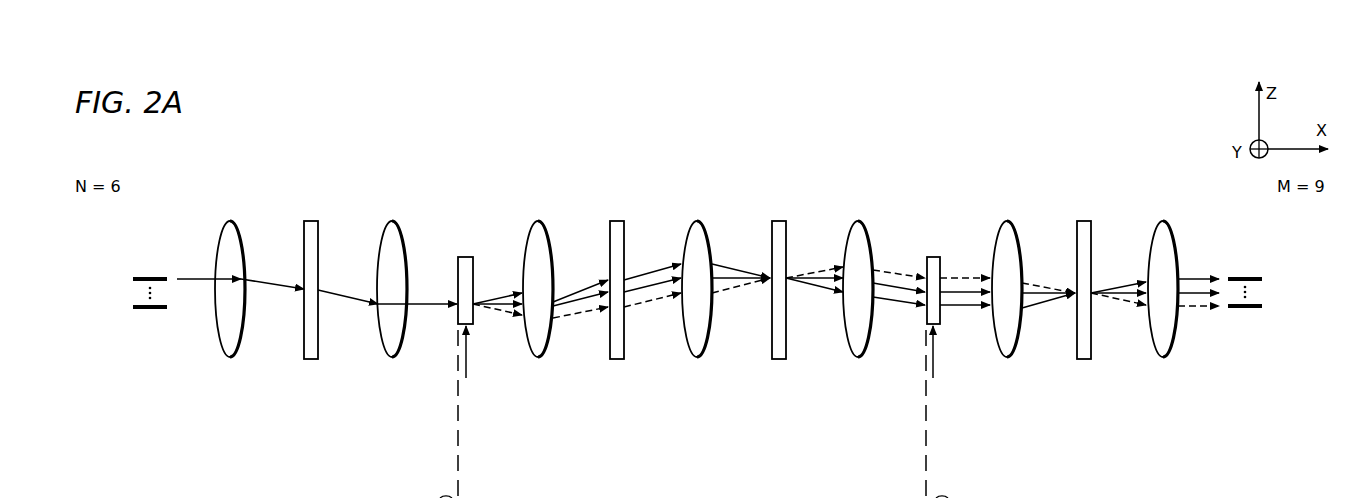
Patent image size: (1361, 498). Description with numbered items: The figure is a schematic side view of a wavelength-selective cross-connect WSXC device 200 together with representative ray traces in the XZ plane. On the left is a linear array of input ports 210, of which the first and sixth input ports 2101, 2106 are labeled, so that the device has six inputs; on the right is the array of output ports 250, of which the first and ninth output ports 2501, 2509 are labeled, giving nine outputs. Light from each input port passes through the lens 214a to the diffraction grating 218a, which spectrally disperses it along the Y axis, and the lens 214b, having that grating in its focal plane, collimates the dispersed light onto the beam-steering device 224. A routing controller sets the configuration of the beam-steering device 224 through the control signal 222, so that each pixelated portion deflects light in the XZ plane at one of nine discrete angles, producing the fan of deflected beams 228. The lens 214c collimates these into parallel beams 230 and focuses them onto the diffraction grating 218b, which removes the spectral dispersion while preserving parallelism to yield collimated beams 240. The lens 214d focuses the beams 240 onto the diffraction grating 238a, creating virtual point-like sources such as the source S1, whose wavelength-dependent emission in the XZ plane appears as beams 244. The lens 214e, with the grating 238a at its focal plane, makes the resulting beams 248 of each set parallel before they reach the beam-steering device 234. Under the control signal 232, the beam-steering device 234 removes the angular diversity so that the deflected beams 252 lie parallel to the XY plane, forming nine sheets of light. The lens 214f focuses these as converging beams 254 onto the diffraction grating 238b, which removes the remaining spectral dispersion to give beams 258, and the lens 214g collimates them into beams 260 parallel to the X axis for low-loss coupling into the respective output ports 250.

The WSXC device 200 is at (166, 149).
The input ports 210 is at (147, 297).
The first input port 2101 is at (150, 277).
The sixth input port 2106 is at (150, 309).
The lens 214a is at (230, 357).
The lens 214b is at (392, 357).
The lens 214c is at (538, 357).
The lens 214d is at (697, 357).
The lens 214e is at (858, 357).
The lens 214f is at (1007, 357).
The lens 214g is at (1163, 357).
The diffraction grating 218a is at (311, 221).
The diffraction grating 218b is at (617, 221).
The control signal 222 is at (468, 361).
The beam-steering device 224 is at (465, 257).
The deflected beams 228 is at (500, 281).
The parallel beams 230 is at (581, 273).
The control signal 232 is at (935, 361).
The beam-steering device 234 is at (933, 257).
The diffraction grating 238a is at (779, 221).
The diffraction grating 238b is at (1084, 221).
The collimated beams 240 is at (653, 261).
The beams 244 is at (818, 261).
The beams 248 is at (899, 267).
The output ports 250 is at (1244, 297).
The first output port 2501 is at (1245, 277).
The ninth output port 2509 is at (1245, 308).
The deflected beams 252 is at (968, 271).
The converging beams 254 is at (1048, 281).
The beams 258 is at (1124, 278).
The collimated beams 260 is at (1197, 268).
The point-like source S1 is at (768, 270).